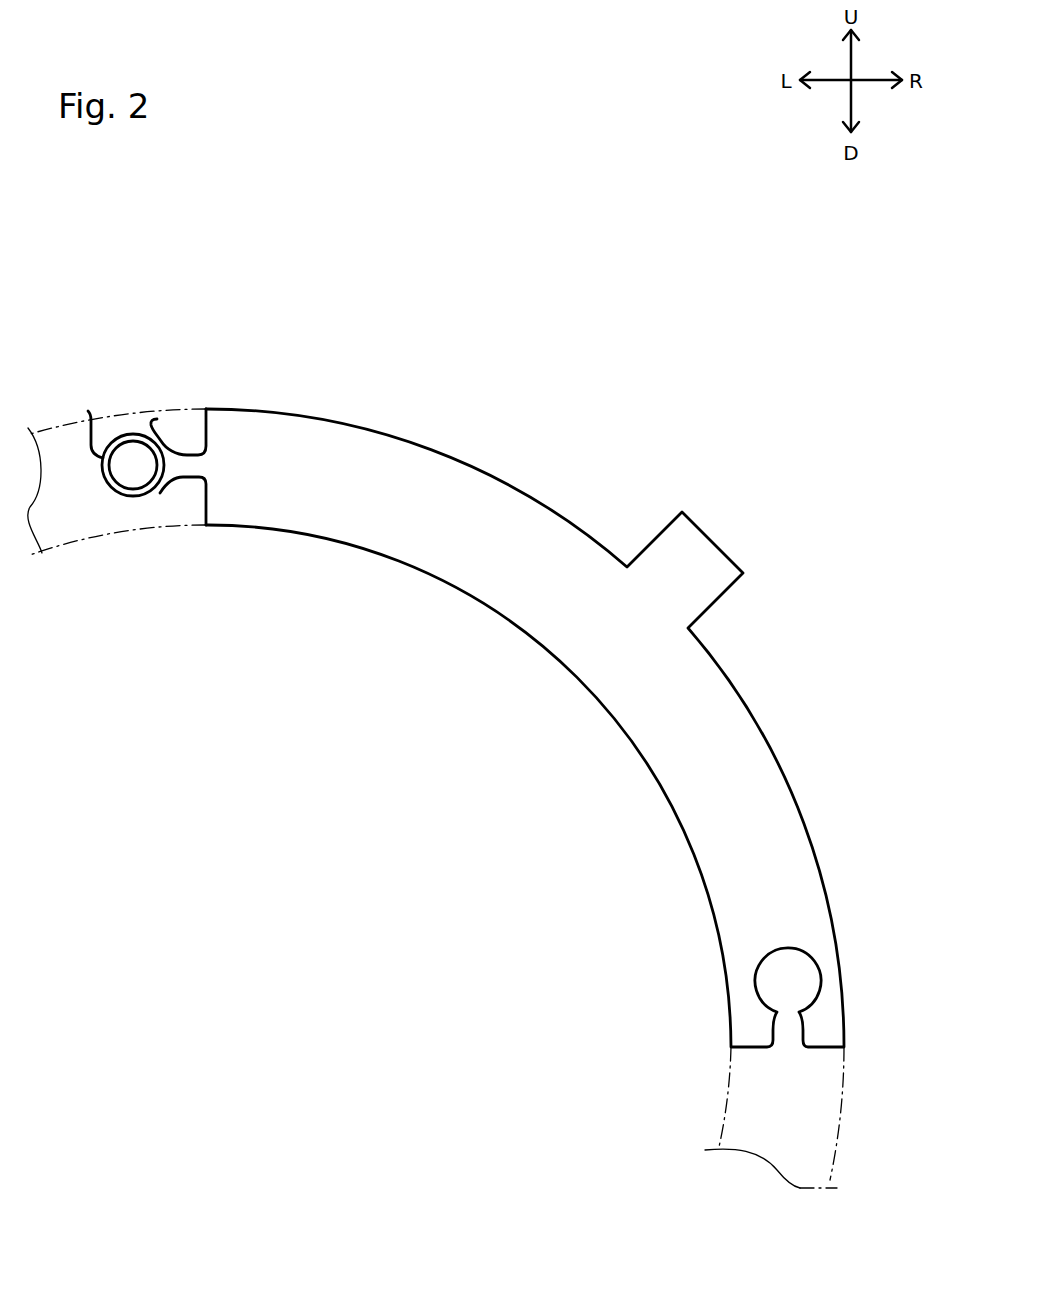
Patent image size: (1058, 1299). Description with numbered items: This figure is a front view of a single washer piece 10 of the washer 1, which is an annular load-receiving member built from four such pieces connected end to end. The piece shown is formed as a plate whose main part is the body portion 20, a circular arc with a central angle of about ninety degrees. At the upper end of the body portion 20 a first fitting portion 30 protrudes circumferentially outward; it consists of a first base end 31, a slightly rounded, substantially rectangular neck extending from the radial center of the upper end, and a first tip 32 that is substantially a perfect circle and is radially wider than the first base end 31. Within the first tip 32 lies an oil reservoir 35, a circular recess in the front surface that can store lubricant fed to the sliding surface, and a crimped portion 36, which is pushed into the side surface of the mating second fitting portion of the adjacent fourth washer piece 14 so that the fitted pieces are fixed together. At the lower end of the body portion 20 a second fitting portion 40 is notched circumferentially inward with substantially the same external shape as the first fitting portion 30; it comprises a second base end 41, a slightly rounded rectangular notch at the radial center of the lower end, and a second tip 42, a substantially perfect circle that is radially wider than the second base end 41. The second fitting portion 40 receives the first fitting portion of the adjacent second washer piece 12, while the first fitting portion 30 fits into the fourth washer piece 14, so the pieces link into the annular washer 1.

The washer 1 is at (156, 193).
The washer piece 10 is at (497, 760).
The second washer piece 12 is at (705, 1117).
The fourth washer piece 14 is at (117, 501).
The body portion 20 is at (525, 783).
The first fitting portion 30 is at (133, 422).
The first base end 31 is at (181, 521).
The first tip 32 is at (103, 539).
The oil reservoir 35 is at (71, 424).
The crimped portion 36 is at (178, 409).
The second fitting portion 40 is at (525, 783).
The second base end 41 is at (525, 739).
The second tip 42 is at (525, 739).